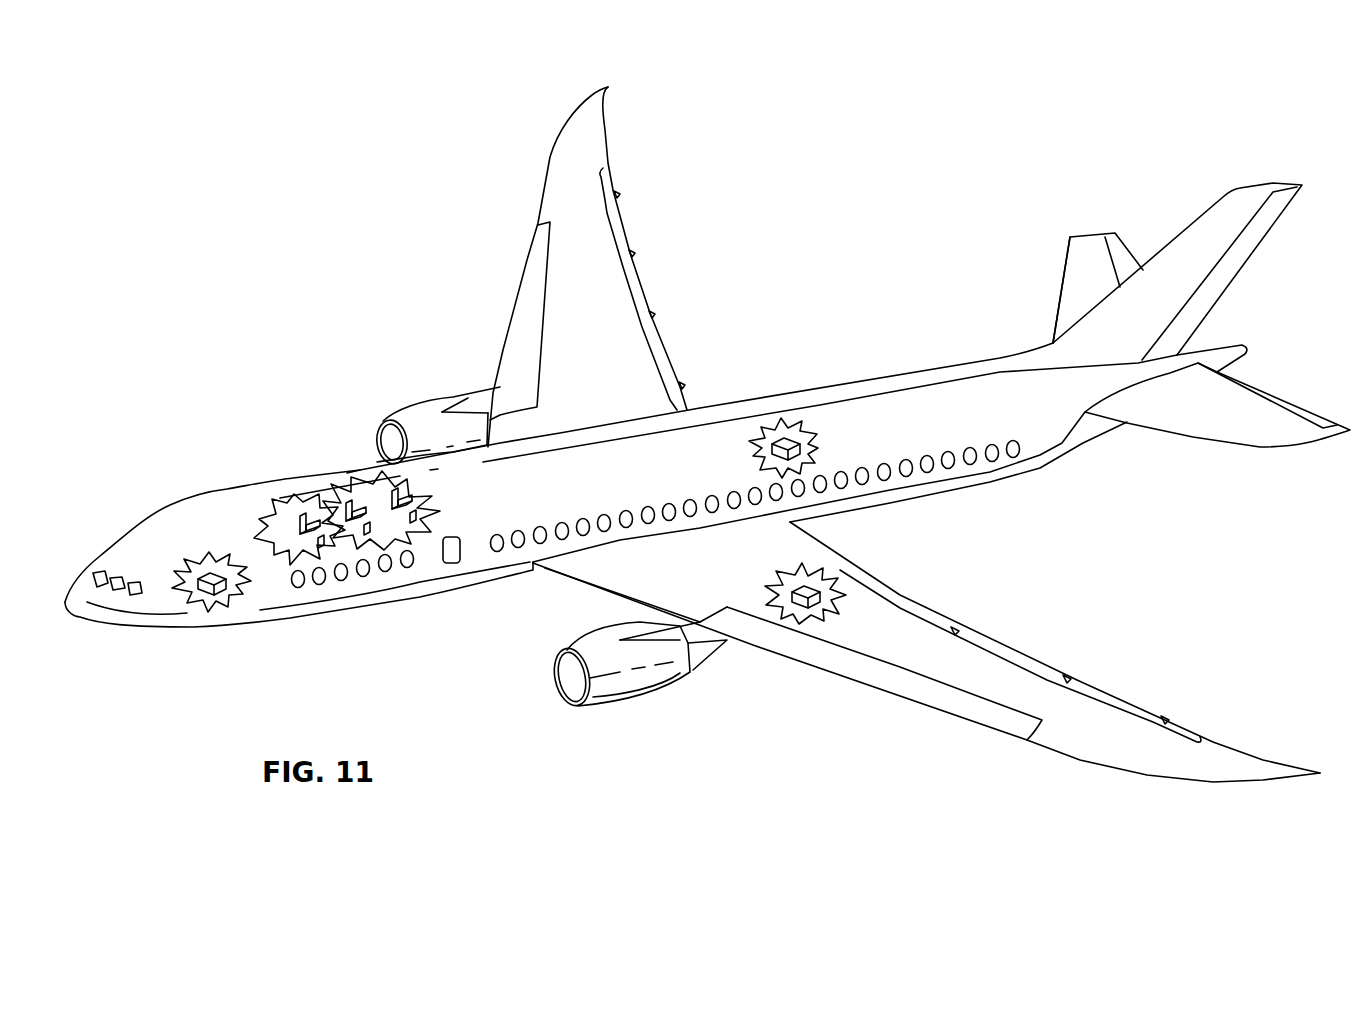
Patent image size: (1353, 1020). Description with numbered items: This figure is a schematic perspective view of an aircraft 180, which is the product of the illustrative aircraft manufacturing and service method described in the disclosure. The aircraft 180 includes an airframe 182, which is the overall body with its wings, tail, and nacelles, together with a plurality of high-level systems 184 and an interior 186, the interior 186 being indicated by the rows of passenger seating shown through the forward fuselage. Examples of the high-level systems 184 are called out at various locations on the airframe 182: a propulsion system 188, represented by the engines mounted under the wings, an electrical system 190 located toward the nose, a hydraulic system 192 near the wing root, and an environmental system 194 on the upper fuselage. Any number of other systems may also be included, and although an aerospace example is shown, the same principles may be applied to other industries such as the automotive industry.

The aircraft 180 is at (398, 228).
The airframe 182 is at (346, 461).
The high-level systems 184 is at (931, 310).
The interior 186 is at (327, 542).
The propulsion system 188 is at (413, 405).
The electrical system 190 is at (207, 563).
The hydraulic system 192 is at (810, 580).
The environmental system 194 is at (778, 442).